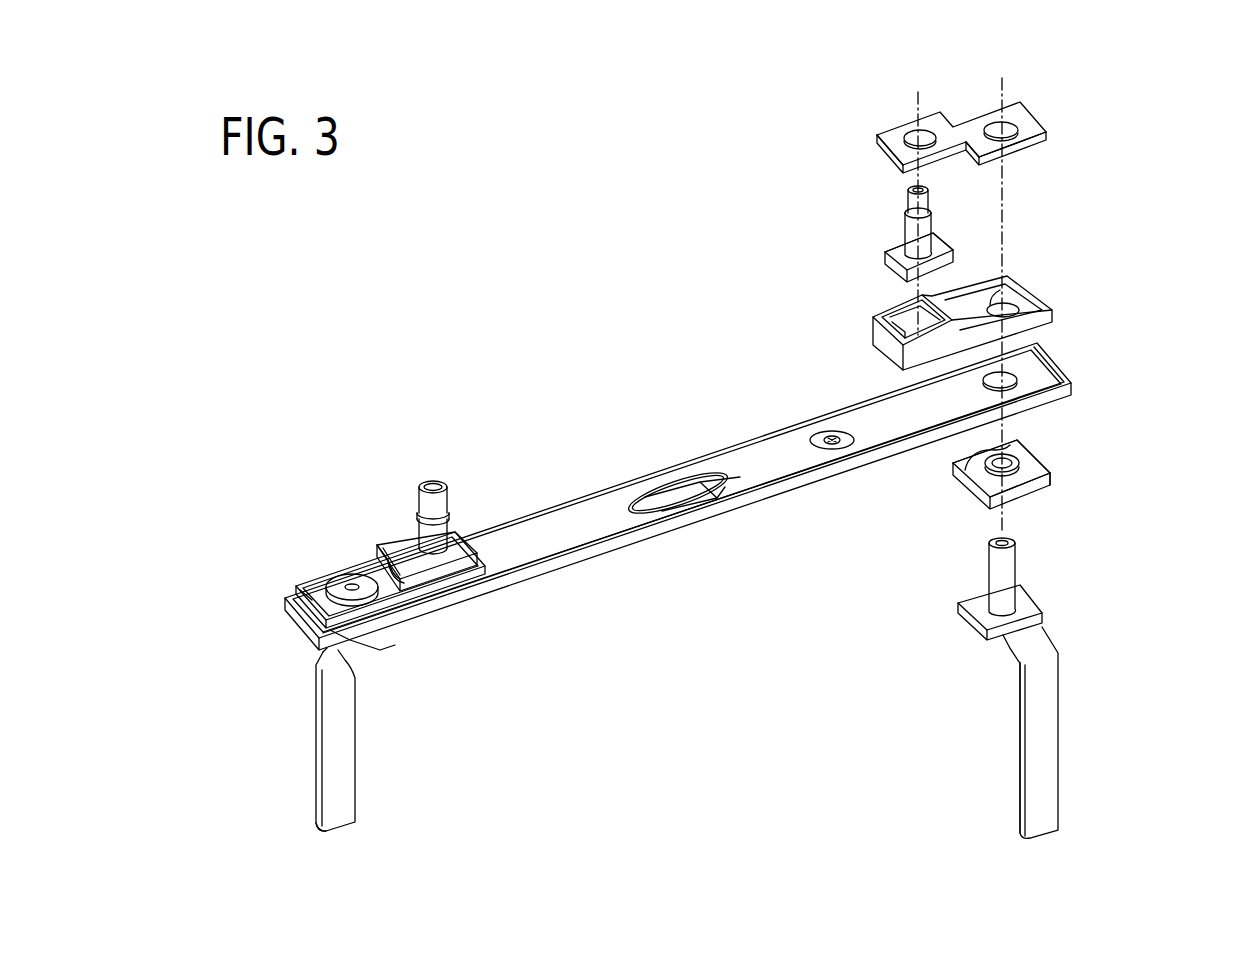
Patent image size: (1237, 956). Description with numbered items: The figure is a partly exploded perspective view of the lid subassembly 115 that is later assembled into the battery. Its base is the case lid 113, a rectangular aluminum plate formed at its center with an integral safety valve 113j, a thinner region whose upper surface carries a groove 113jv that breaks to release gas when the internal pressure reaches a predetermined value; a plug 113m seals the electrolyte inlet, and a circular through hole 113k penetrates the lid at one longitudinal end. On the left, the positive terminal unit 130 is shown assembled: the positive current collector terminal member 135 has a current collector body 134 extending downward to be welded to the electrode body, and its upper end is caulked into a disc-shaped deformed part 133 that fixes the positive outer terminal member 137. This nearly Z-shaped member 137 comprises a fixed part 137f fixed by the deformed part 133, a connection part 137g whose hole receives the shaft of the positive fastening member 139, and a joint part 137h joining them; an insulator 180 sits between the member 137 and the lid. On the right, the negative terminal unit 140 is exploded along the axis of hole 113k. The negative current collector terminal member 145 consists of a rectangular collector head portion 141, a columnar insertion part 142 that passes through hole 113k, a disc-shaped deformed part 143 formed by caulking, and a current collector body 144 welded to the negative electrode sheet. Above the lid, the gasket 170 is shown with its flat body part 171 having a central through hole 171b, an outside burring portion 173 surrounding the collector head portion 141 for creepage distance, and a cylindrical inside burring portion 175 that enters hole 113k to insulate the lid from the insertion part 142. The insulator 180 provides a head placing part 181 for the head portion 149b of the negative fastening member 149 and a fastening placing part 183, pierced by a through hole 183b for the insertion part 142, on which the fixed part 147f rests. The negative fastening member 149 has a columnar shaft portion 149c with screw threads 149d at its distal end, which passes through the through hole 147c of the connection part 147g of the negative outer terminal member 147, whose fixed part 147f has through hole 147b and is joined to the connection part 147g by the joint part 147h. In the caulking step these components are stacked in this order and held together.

The case lid 113 is at (633, 537).
The safety valve 113j is at (680, 490).
The groove 113jv is at (685, 498).
The through hole 113k is at (1010, 378).
The plug 113m is at (828, 437).
The lid subassembly 115 is at (603, 400).
The positive terminal unit 130 is at (358, 608).
The deformed part 133 is at (340, 577).
The current collector body 134 is at (327, 775).
The positive current collector terminal member 135 is at (345, 758).
The positive outer terminal member 137 is at (390, 537).
The fixed part 137f is at (310, 587).
The connection part 137g is at (408, 540).
The joint part 137h is at (377, 567).
The positive fastening member 139 is at (443, 503).
The negative terminal unit 140 is at (973, 455).
The collector head portion 141 is at (968, 622).
The insertion part 142 is at (1000, 585).
The deformed part 143 is at (1000, 552).
The current collector body 144 is at (1030, 775).
The negative current collector terminal member 145 is at (1050, 750).
The negative outer terminal member 147 is at (1035, 125).
The through hole 147b is at (1010, 120).
The through hole 147c is at (910, 132).
The fixed part 147f is at (1035, 142).
The connection part 147g is at (880, 142).
The joint part 147h is at (968, 152).
The negative fastening member 149 is at (913, 243).
The head portion 149b is at (945, 243).
The shaft portion 149c is at (900, 233).
The screw threads 149d is at (905, 198).
The gasket 170 is at (965, 490).
The body part 171 is at (1035, 465).
The through hole 171b is at (962, 470).
The outside burring portion 173 is at (1040, 480).
The inside burring portion 175 is at (1005, 455).
The insulator 180 is at (463, 577).
The head placing part 181 is at (905, 313).
The fastening placing part 183 is at (1025, 298).
The through hole 183b is at (1020, 300).